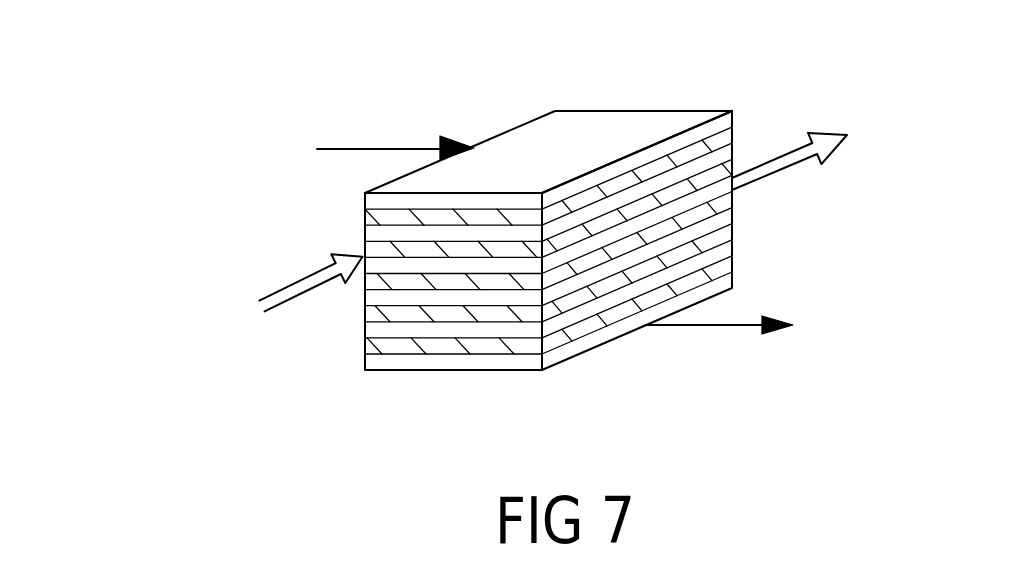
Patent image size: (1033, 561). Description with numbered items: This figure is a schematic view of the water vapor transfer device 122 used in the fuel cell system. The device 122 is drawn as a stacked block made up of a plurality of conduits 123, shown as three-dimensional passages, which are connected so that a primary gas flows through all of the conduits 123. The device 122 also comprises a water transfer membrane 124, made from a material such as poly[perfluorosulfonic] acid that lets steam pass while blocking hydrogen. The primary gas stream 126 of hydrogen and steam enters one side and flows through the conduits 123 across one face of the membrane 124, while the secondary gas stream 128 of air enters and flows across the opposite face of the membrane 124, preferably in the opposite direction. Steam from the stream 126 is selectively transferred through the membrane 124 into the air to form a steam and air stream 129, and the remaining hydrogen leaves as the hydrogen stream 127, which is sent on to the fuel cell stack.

The water vapor transfer device 122 is at (668, 88).
The conduits 123 is at (734, 119).
The water transfer membrane 124 is at (400, 187).
The primary gas stream 126 is at (300, 296).
The hydrogen stream 127 is at (773, 174).
The secondary gas stream 128 is at (382, 148).
The steam and air stream 129 is at (700, 328).